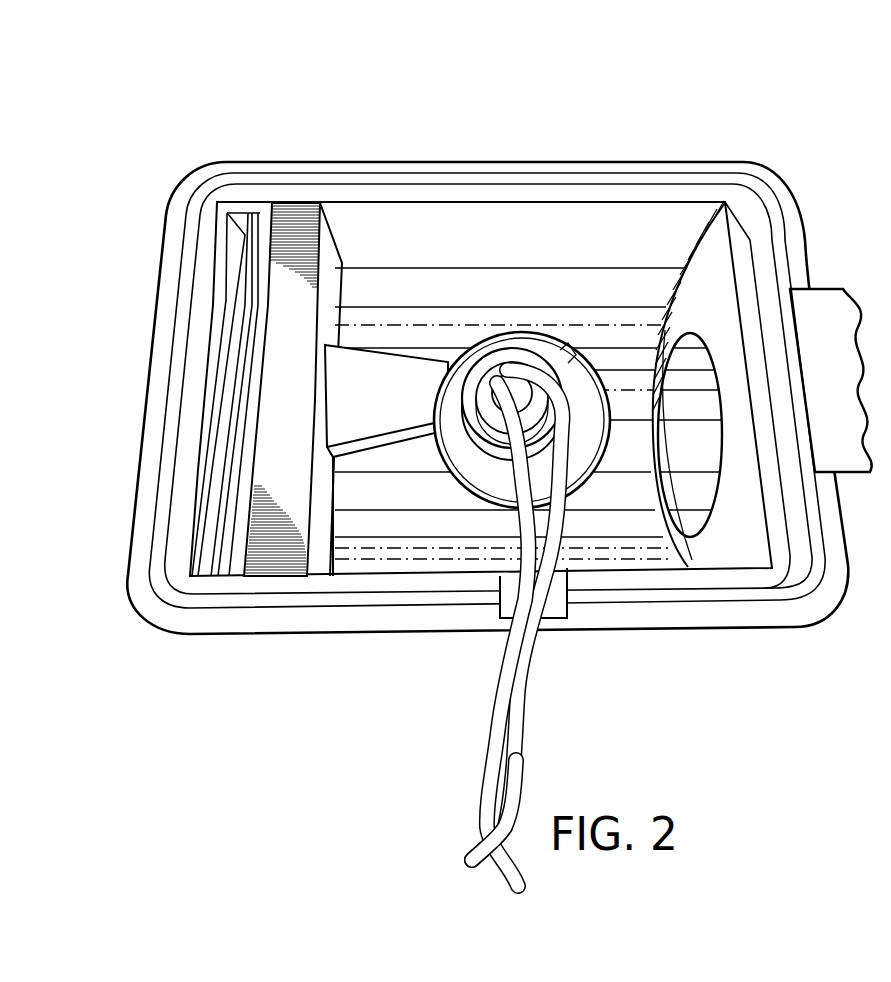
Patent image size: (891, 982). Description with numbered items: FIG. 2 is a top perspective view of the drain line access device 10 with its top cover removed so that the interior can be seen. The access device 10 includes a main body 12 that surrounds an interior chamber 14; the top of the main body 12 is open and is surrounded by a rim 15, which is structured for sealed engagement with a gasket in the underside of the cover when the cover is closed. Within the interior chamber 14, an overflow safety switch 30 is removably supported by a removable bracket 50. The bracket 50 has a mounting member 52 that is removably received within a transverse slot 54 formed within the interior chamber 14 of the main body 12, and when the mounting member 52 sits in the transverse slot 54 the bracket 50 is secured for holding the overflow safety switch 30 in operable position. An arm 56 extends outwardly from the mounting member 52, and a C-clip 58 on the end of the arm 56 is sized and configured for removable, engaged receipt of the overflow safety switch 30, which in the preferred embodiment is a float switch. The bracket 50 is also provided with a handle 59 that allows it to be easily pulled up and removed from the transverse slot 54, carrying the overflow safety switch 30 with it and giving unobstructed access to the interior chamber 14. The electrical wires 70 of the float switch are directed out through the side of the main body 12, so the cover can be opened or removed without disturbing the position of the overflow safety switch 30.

The access device 10 is at (481, 453).
The main body 12 is at (343, 639).
The interior chamber 14 is at (527, 233).
The rim 15 is at (610, 161).
The overflow safety switch 30 is at (590, 355).
The bracket 50 is at (392, 305).
The mounting member 52 is at (225, 236).
The transverse slot 54 is at (240, 210).
The arm 56 is at (418, 397).
The C-clip 58 is at (540, 328).
The handle 59 is at (293, 210).
The electrical wires 70 is at (522, 737).